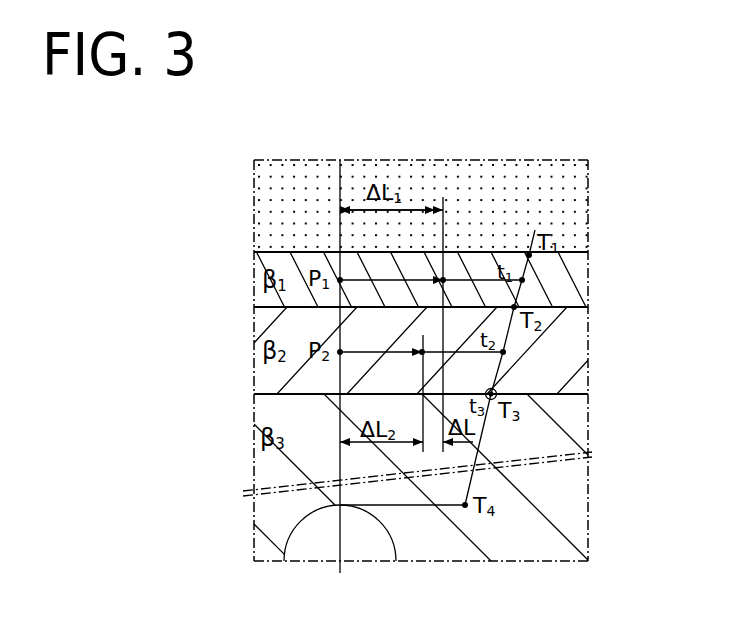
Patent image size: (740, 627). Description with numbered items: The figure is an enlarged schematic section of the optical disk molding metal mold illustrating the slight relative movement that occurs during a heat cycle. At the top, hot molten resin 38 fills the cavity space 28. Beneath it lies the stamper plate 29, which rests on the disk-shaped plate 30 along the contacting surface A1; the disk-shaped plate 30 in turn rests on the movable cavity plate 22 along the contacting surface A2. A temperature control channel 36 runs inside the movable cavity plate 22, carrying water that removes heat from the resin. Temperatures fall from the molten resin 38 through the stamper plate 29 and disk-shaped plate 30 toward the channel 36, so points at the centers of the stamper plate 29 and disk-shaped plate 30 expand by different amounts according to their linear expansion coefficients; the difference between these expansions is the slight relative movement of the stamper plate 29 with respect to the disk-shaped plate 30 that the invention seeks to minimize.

The cavity space 28 is at (578, 180).
The molten resin 38 is at (572, 217).
The stamper plate 29 is at (578, 282).
The disk-shaped plate 30 is at (562, 361).
The movable cavity plate 22 is at (572, 517).
The temperature control channel 36 is at (358, 538).
The contacting surface A1 is at (560, 311).
The contacting surface A2 is at (547, 400).